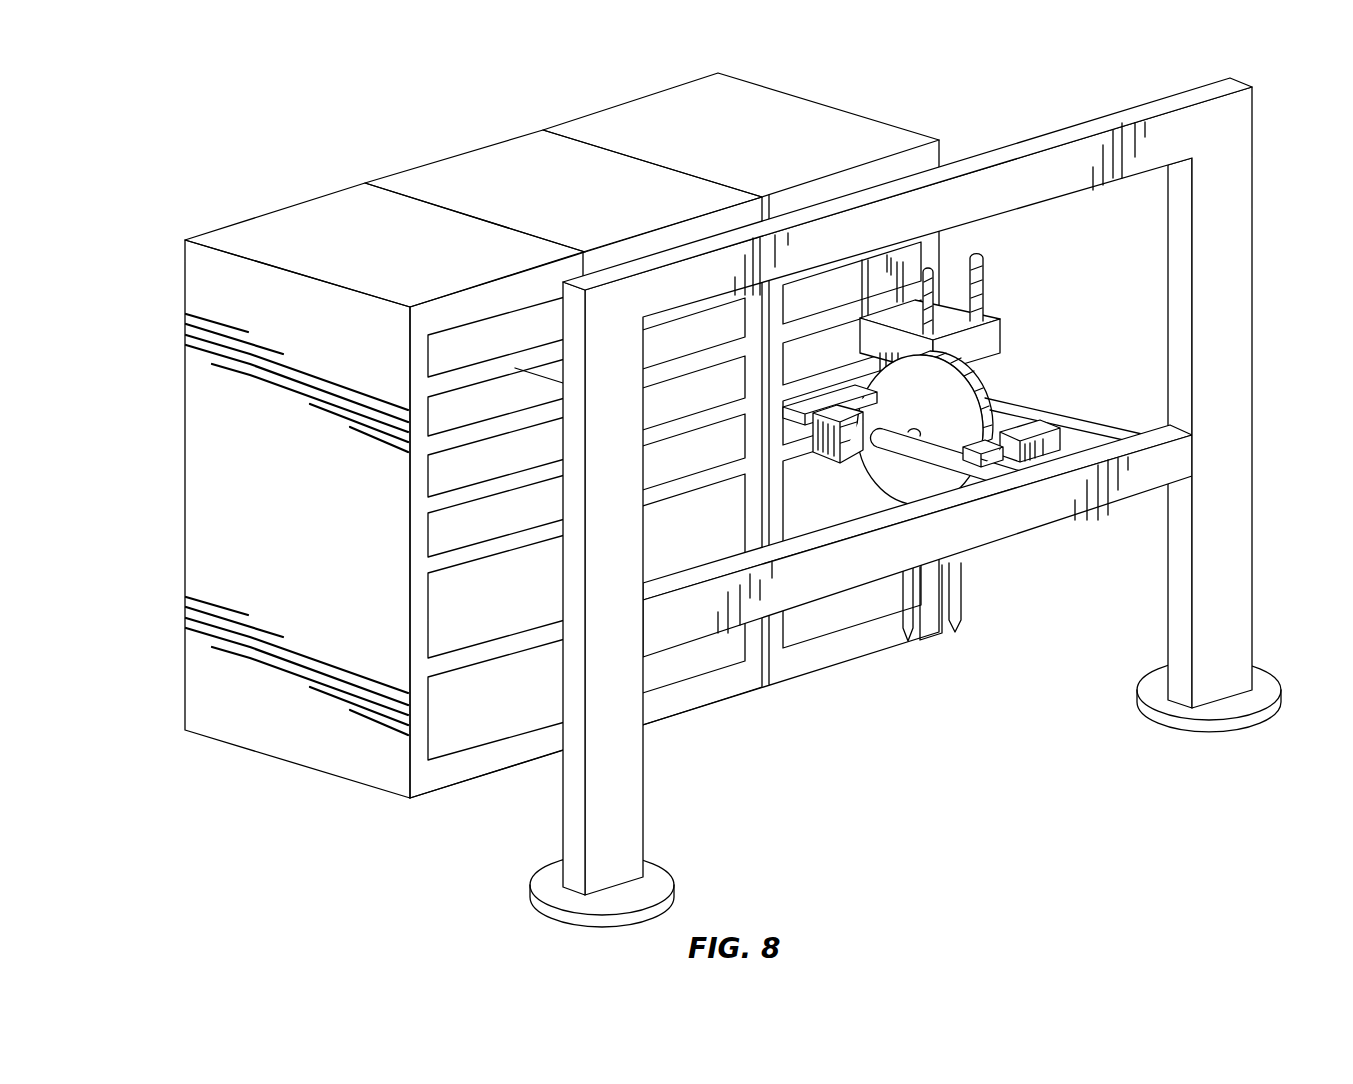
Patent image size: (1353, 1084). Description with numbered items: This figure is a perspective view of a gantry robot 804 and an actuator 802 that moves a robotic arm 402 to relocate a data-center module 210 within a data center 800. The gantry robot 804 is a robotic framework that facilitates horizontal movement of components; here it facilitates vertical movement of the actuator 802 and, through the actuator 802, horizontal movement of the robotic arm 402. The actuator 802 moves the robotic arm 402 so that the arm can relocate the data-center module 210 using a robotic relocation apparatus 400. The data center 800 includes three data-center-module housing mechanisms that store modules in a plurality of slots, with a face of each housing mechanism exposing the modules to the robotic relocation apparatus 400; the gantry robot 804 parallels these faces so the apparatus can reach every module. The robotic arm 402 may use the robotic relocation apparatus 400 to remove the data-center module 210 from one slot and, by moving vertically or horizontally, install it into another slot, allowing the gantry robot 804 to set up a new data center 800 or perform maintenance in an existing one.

The data center 800 is at (701, 484).
The data-center module 210 is at (794, 593).
The robotic relocation apparatus 400 is at (1089, 447).
The robotic arm 402 is at (1010, 440).
The actuator 802 is at (1027, 537).
The gantry robot 804 is at (803, 489).